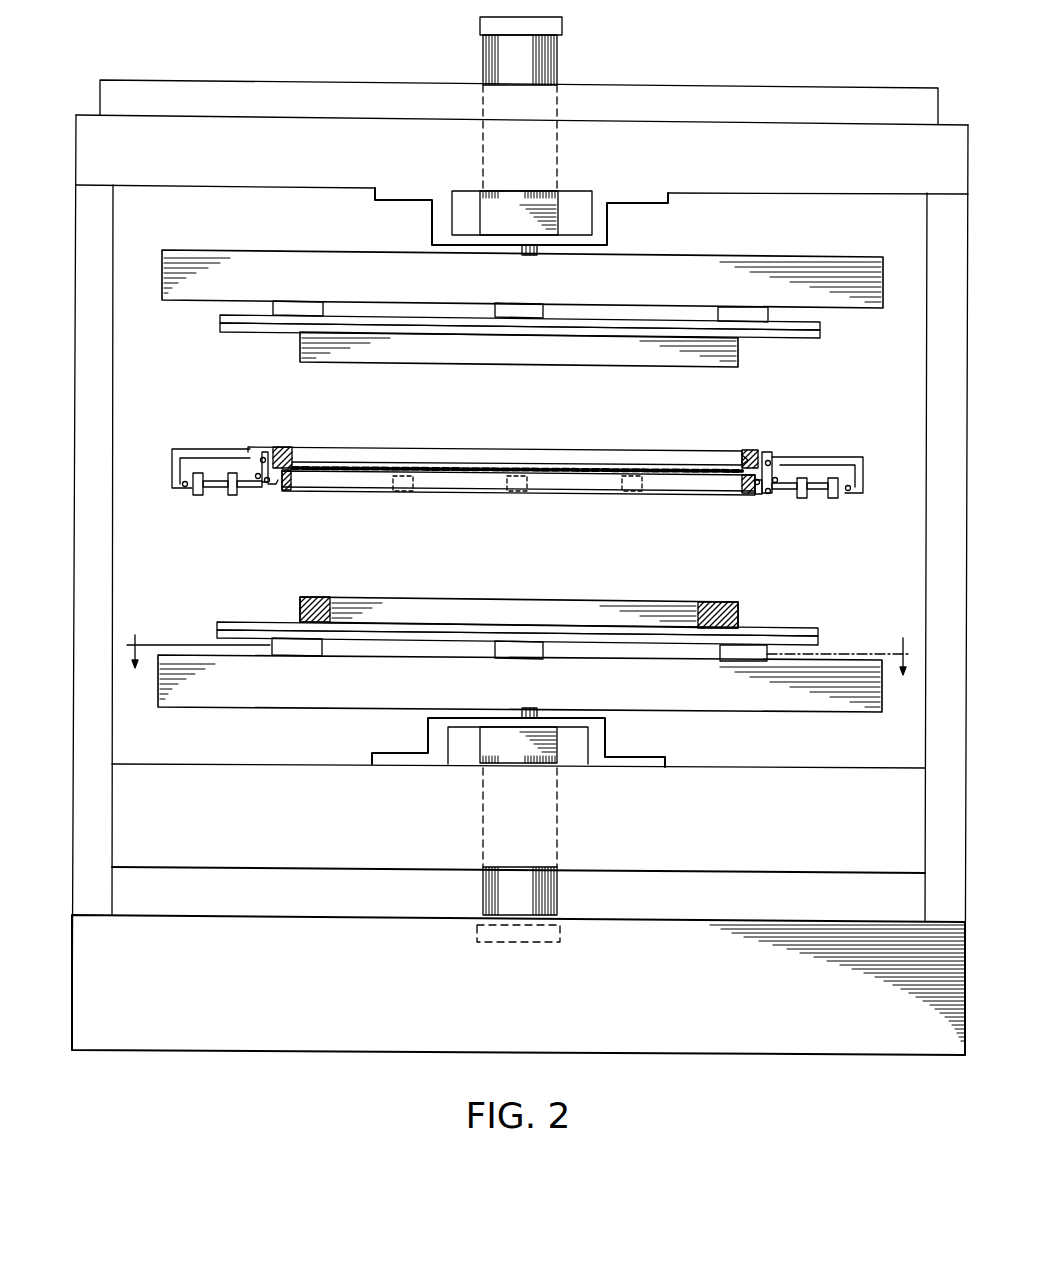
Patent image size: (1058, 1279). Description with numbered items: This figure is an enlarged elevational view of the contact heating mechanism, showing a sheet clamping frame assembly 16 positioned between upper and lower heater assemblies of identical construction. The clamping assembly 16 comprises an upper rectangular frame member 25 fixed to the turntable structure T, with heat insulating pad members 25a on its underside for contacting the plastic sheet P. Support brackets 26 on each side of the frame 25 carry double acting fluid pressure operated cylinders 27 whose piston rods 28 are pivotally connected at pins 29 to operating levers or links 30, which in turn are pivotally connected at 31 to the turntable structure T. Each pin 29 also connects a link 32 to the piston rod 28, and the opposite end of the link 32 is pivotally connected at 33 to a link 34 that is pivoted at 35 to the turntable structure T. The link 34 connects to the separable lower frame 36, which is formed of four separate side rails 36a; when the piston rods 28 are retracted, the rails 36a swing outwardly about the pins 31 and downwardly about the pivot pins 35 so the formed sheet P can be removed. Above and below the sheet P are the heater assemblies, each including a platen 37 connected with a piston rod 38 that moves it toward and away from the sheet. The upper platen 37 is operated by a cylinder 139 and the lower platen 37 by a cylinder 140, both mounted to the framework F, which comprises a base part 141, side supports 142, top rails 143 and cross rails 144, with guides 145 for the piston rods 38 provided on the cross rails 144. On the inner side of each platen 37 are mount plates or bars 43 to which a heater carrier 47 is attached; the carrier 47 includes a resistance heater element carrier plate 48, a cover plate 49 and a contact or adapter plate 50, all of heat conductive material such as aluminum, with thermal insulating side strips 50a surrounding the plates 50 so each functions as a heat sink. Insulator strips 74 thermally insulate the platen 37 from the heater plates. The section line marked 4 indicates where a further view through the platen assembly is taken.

The fluid pressure operated cylinder 139 is at (489, 56).
The fluid pressure operated cylinder 140 is at (557, 893).
The base part 141 is at (720, 998).
The side supports 142 is at (112, 584).
The top rails 143 is at (776, 116).
The cross rails 144 is at (735, 177).
The guides 145 is at (604, 222).
The piston rod 38 is at (530, 253).
The platen 37 is at (722, 296).
The insulator strips 74 is at (558, 312).
The cover plate 49 is at (243, 317).
The resistance heater element carrier plate 48 is at (262, 331).
The mount plates or bars 43 is at (495, 310).
The contact plate or adapter plate 50 is at (467, 366).
The thermal insulating side strips 50a is at (300, 611).
The heater carrier 47 is at (753, 352).
The separable lower frame 36 is at (471, 500).
The side rails 36a is at (298, 488).
The sheets P is at (575, 470).
The fluid pressure operated cylinders 27 is at (198, 493).
The support brackets 26 is at (172, 451).
The piston rods 28 is at (247, 472).
The link 34 is at (264, 455).
The pivot pins 35 is at (258, 487).
The link 32 is at (271, 489).
The pivotal connection 33 is at (754, 492).
The pin 29 is at (769, 494).
The operating levers or links 30 is at (774, 475).
The pivot pins 31 is at (771, 466).
The upper rectangular frame member 25 is at (750, 450).
The heat insulating pad members 25a is at (741, 465).
The turntable structure T is at (770, 458).
The sheet clamping frame assembly 16 is at (237, 501).
The section line 4- 4 is at (518, 668).
The framework F is at (910, 80).